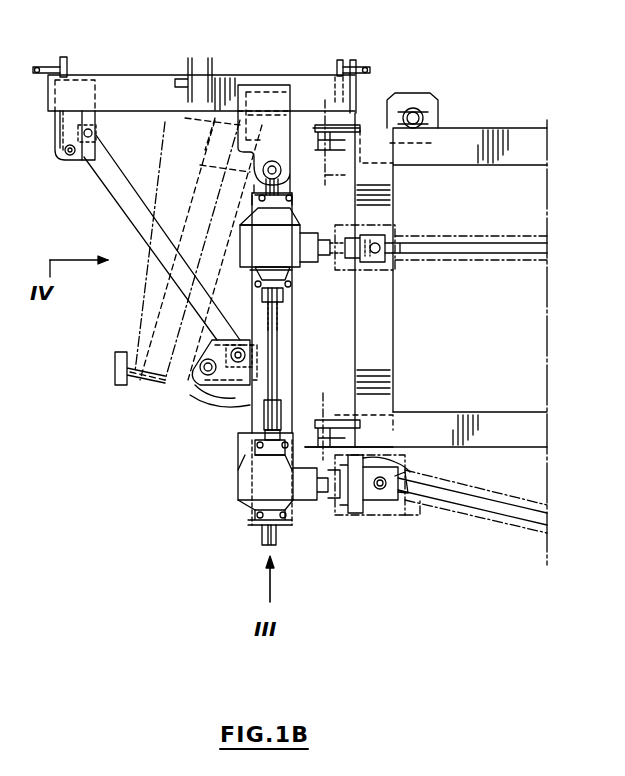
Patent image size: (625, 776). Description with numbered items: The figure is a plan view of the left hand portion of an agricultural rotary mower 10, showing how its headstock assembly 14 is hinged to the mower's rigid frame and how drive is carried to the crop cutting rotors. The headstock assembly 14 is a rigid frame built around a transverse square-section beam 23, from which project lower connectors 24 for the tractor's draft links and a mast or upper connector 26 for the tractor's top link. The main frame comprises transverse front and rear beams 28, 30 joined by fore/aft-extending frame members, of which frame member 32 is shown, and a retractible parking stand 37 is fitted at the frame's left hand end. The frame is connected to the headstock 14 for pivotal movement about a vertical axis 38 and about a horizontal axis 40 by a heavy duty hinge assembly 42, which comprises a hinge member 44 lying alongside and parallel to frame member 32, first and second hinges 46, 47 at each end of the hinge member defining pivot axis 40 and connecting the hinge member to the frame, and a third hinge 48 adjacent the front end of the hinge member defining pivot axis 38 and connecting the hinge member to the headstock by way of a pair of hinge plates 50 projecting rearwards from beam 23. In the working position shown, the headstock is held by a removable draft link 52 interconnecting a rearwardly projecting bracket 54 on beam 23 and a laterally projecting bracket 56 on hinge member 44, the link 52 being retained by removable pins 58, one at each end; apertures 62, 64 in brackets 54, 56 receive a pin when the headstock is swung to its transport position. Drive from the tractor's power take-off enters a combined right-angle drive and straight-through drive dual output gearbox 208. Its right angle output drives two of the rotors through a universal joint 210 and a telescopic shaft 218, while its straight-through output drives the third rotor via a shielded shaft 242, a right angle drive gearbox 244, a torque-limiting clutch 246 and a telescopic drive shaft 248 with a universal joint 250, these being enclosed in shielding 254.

The agricultural rotary mower 10 is at (384, 569).
The headstock assembly 14 is at (376, 64).
The transverse square-section beam 23 is at (118, 77).
The lower connectors 24 is at (62, 58).
The mast or upper connector 26 is at (210, 60).
The front beam 28 is at (498, 128).
The rear beam 30 is at (458, 412).
The frame member 32 is at (396, 272).
The retractible parking stand 37 is at (440, 96).
The vertical axis 38 is at (268, 170).
The horizontal axis 40 is at (326, 176).
The heavy duty hinge assembly 42 is at (234, 454).
The hinge member 44 is at (222, 403).
The first hinge 46 is at (360, 112).
The second hinge 47 is at (336, 420).
The third hinge 48 is at (250, 171).
The hinge plates 50 is at (268, 85).
The removable draft link 52 is at (107, 190).
The rearwardly projecting bracket 54 is at (58, 140).
The laterally projecting bracket 56 is at (205, 386).
The removable pins 58 is at (92, 131).
The aperture 62 is at (66, 160).
The aperture 64 is at (200, 366).
The dual output gearbox 208 is at (284, 258).
The universal joint 210 is at (378, 232).
The telescopic shaft 218 is at (460, 258).
The shielded shaft 242 is at (283, 330).
The right angle drive gearbox 244 is at (262, 487).
The torque-limiting clutch 246 is at (348, 513).
The telescopic drive shaft 248 is at (445, 503).
The universal joint 250 is at (385, 465).
The shielding 254 is at (416, 505).